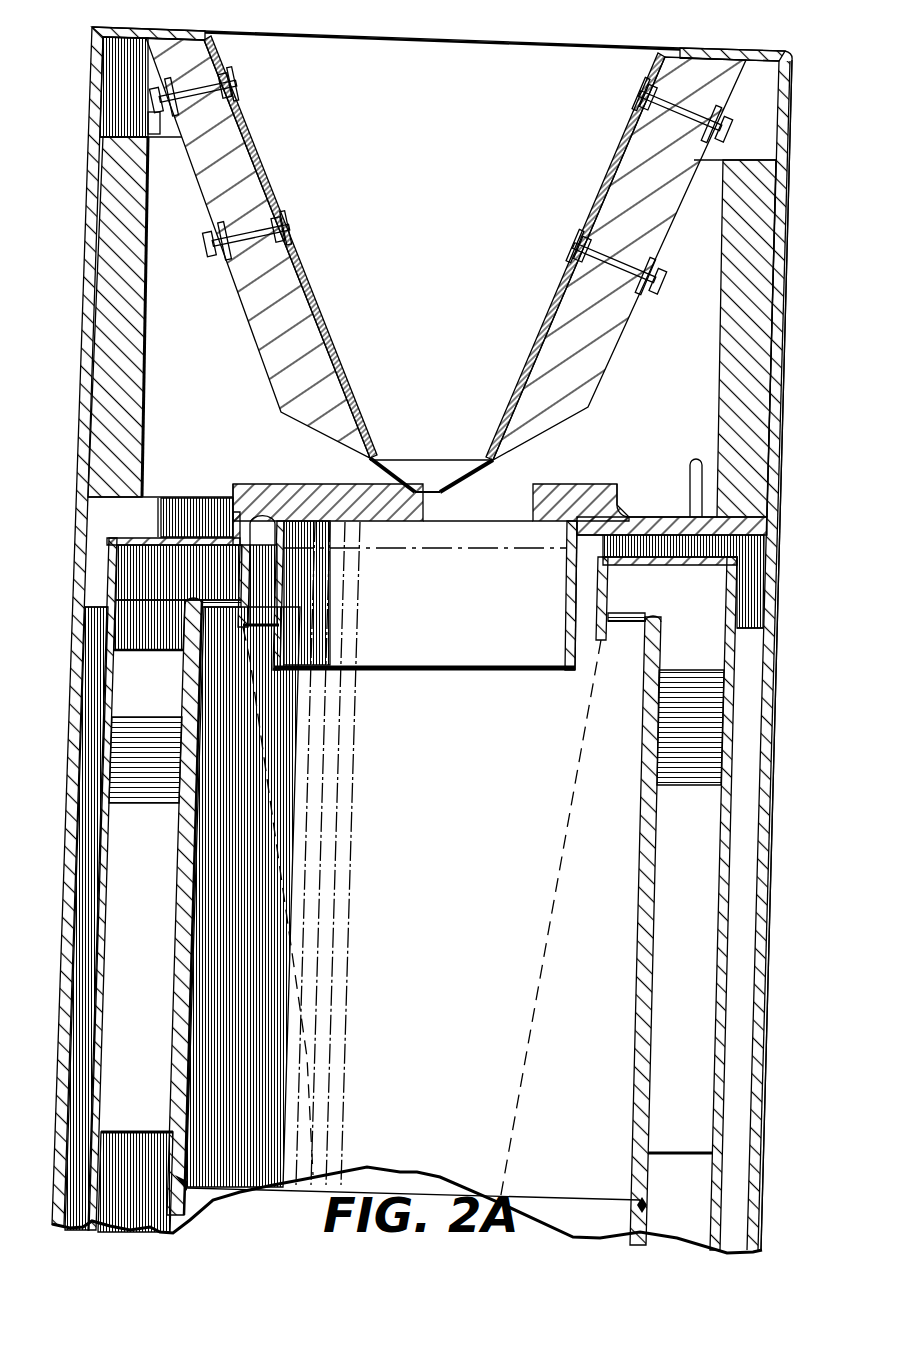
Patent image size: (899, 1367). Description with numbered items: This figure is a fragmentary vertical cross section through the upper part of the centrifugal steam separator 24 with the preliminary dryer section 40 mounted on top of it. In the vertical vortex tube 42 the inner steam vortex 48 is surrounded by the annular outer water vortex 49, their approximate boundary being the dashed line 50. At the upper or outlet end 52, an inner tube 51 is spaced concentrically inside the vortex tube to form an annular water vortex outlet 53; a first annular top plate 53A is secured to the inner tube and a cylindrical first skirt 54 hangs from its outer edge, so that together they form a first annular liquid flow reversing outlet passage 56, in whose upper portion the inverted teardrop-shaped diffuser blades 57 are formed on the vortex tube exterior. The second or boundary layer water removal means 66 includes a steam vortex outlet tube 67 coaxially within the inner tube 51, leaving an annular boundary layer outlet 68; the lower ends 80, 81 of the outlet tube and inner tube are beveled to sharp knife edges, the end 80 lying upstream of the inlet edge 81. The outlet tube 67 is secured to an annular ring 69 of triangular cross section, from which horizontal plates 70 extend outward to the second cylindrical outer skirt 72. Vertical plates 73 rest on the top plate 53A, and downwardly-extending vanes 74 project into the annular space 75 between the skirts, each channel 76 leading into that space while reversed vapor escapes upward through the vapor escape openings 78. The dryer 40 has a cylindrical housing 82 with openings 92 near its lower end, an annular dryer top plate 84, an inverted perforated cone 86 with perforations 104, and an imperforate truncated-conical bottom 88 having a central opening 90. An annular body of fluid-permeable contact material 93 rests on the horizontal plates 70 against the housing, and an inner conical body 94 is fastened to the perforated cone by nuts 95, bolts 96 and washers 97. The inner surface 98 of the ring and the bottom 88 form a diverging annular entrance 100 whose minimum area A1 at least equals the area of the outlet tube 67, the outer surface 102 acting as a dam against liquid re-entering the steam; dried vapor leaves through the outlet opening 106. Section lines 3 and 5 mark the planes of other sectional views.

The steam separator 24 is at (760, 1135).
The preliminary dryer section 40 is at (795, 330).
The vertical vortex tube 42 is at (640, 829).
The inner steam vortex 48 is at (467, 912).
The annular outer water vortex 49 is at (570, 977).
The dashed line 50 is at (290, 1010).
The inner tube 51 is at (611, 588).
The upper or outlet end 52 is at (652, 618).
The annular water vortex outlet 53 is at (635, 642).
The first annular top plate 53A is at (603, 561).
The cylindrical first skirt 54 is at (724, 650).
The first annular liquid flow reversing outlet passage 56 is at (662, 1219).
The diffuser blades 57 is at (160, 650).
The second annular or boundary layer water removal means 66 is at (621, 486).
The steam vortex outlet tube 67 is at (268, 660).
The annular boundary layer outlet 68 is at (565, 670).
The annular ring 69 is at (232, 482).
The horizontal plates 70 is at (688, 508).
The second cylindrical outer skirt 72 is at (750, 832).
The vertical plate 73 is at (295, 528).
The downwardly-extending vane 74 is at (140, 660).
The annular space 75 is at (90, 832).
The channel 76 is at (696, 554).
The vapor escape openings 78 is at (124, 530).
The lower end of steam vortex outlet tube 80 is at (272, 680).
The lower or inlet edge of inner tube 81 is at (238, 673).
The cylindrical housing 82 is at (779, 174).
The annular dryer top plate 84 is at (782, 48).
The inverted perforated cone 86 is at (272, 195).
The imperforate bottom 88 is at (487, 473).
The central opening 90 is at (427, 488).
The openings 92 is at (703, 463).
The annular body of fluid-permeable contact material 93 is at (146, 387).
The inner body of fluid-permeable contact material 94 is at (250, 316).
The nuts 95 is at (150, 91).
The bolts 96 is at (230, 78).
The washers 97 is at (237, 92).
The inner surface of ring 98 is at (267, 481).
The annular entrance 100 is at (554, 494).
The outer or peripheral surface of ring 102 is at (626, 497).
The perforations 104 is at (240, 35).
The outlet opening 106 is at (512, 78).
The minimum cross-sectional area A1 is at (568, 490).
The section line 3 is at (85, 606).
The section line 5 is at (105, 633).